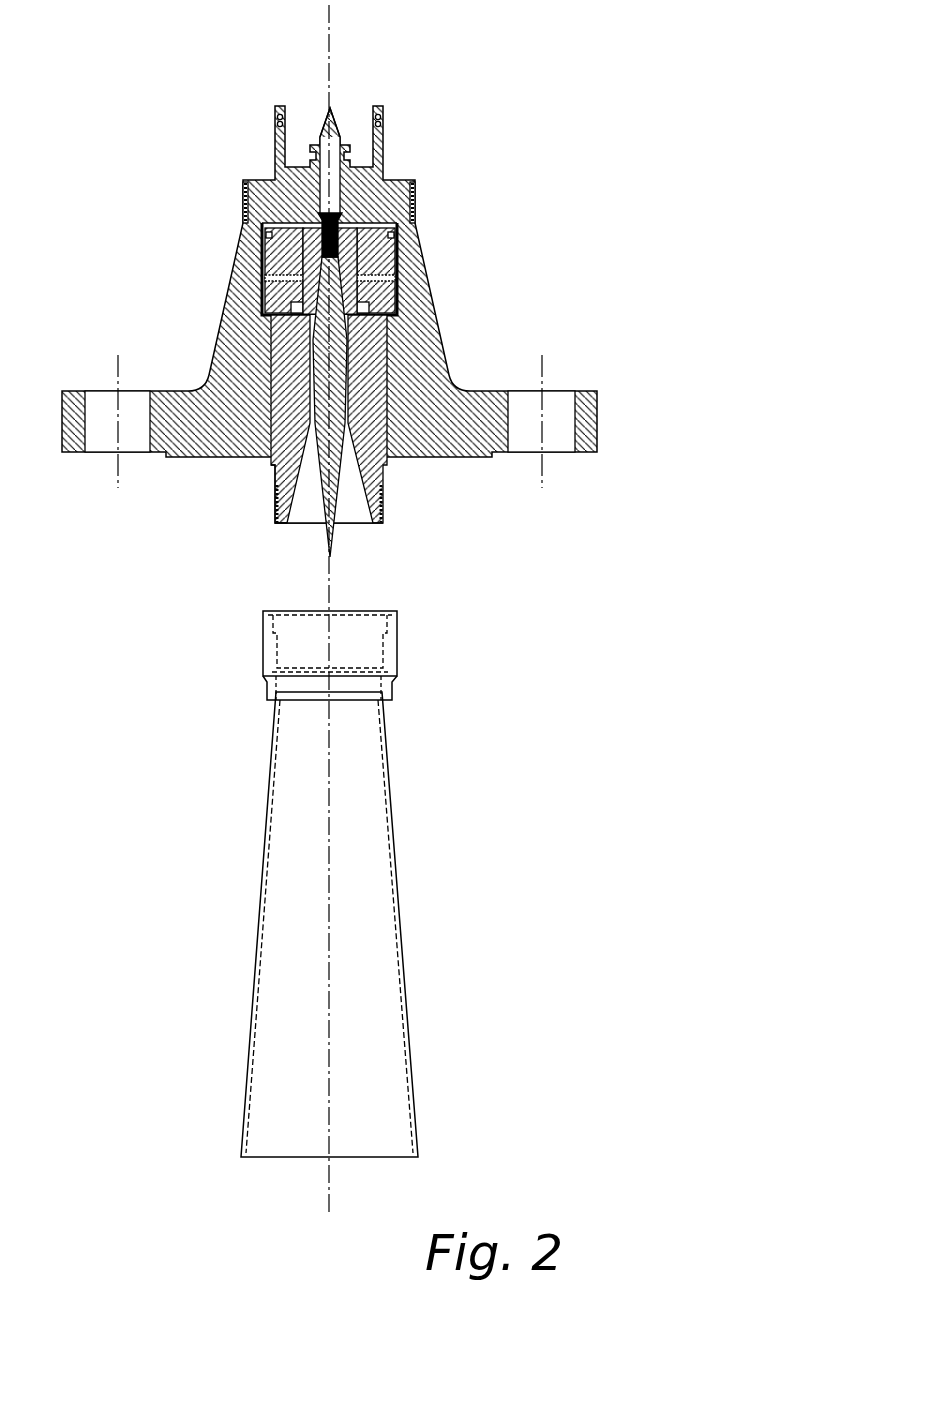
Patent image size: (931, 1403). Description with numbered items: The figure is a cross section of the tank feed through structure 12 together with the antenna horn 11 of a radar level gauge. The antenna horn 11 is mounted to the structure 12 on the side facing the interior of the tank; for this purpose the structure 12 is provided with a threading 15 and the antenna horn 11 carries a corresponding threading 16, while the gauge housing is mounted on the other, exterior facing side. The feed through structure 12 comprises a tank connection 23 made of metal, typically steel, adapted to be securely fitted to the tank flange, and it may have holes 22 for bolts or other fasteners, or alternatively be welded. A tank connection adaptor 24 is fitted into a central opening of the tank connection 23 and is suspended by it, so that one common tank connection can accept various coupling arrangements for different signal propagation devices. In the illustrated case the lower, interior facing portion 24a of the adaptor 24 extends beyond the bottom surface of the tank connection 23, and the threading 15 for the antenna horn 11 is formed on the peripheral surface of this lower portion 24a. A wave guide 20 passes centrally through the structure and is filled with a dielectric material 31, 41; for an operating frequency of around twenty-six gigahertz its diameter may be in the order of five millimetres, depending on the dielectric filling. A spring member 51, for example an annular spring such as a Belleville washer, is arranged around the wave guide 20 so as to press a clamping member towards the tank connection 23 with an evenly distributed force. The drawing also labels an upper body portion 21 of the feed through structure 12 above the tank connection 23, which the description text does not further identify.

The antenna horn 11 is at (394, 840).
The tank feed through structure 12 is at (348, 311).
The threading 15 is at (385, 503).
The threading 16 is at (385, 652).
The wave guide 20 is at (332, 195).
The nozzle holder 21 is at (213, 307).
The holes 22 is at (101, 402).
The tank connection 23 is at (430, 375).
The tank connection adaptor 24 is at (334, 407).
The lower portion of the adaptor 24a is at (278, 492).
The dielectric material 31 is at (318, 398).
The dielectric material 41 is at (335, 133).
The spring member 51 is at (380, 277).